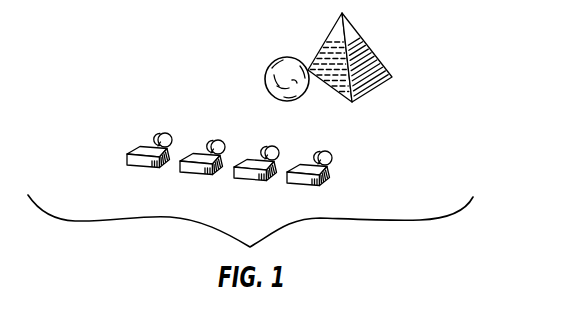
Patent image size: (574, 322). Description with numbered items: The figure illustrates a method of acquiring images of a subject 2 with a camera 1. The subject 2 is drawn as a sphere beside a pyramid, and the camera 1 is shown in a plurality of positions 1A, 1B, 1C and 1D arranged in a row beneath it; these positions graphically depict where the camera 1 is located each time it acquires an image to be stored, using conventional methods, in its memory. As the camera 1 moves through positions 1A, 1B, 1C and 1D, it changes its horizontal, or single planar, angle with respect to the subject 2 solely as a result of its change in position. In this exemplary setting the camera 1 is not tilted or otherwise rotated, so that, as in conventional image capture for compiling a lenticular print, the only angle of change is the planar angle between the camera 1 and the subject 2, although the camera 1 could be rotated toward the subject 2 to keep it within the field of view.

The camera 1 is at (250, 183).
The camera position 1A is at (142, 168).
The camera position 1B is at (199, 175).
The camera position 1C is at (252, 181).
The camera position 1D is at (307, 186).
The subject 2 is at (384, 38).